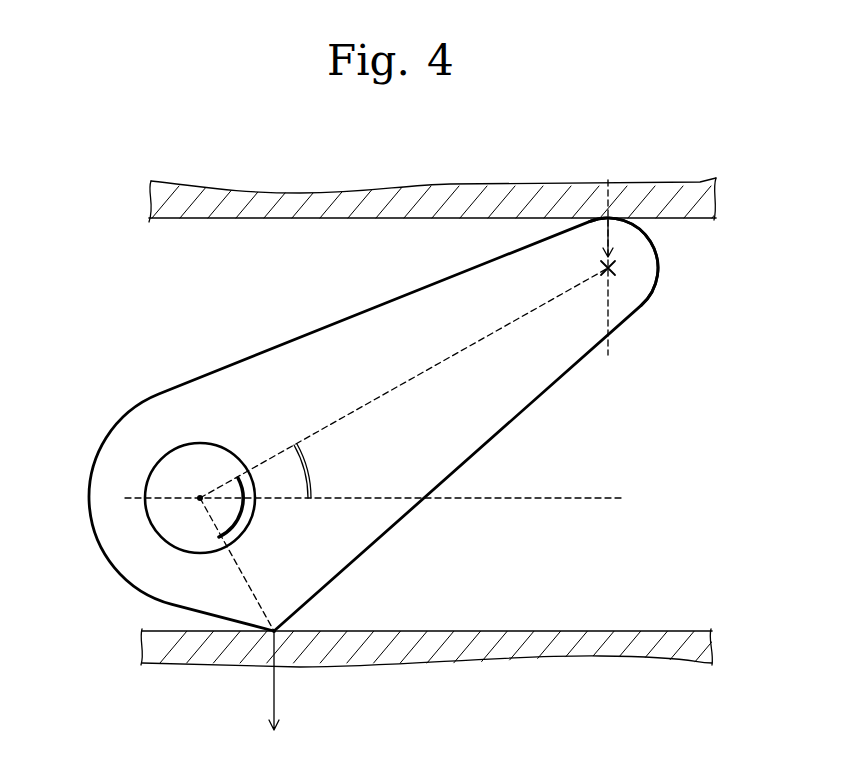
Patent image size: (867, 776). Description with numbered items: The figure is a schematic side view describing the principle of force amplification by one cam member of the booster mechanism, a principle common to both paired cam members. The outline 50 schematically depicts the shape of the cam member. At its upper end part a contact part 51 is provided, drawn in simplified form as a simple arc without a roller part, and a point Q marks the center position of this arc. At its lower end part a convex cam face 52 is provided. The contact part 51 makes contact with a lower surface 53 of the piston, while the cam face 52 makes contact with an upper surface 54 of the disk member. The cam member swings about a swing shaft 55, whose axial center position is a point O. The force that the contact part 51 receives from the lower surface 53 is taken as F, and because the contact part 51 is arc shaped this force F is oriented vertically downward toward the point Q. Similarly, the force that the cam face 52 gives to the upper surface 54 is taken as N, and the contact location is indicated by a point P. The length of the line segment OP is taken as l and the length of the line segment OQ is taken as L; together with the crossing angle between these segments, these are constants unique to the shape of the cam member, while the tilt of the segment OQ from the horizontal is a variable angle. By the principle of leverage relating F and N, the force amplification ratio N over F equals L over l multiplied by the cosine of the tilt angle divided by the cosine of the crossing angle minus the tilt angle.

The cam member 50 is at (525, 385).
The contact part 51 is at (654, 238).
The convex cam face 52 is at (280, 633).
The lower surface of the piston 53 is at (197, 218).
The upper surface of the disk member 54 is at (682, 631).
The swing shaft 55 is at (165, 522).
The axial center position of the swing shaft O is at (200, 498).
The contact location P is at (275, 630).
The center position of the arc Q is at (613, 272).
The force received by the contact part F is at (606, 228).
The force given by the cam face N is at (278, 672).
The length of line segment OQ L is at (598, 270).
The length of line segment OP l is at (265, 627).